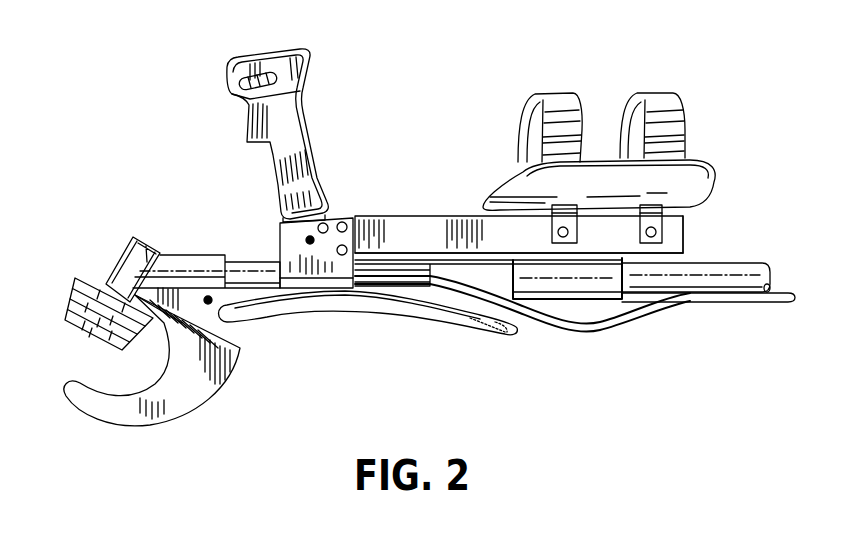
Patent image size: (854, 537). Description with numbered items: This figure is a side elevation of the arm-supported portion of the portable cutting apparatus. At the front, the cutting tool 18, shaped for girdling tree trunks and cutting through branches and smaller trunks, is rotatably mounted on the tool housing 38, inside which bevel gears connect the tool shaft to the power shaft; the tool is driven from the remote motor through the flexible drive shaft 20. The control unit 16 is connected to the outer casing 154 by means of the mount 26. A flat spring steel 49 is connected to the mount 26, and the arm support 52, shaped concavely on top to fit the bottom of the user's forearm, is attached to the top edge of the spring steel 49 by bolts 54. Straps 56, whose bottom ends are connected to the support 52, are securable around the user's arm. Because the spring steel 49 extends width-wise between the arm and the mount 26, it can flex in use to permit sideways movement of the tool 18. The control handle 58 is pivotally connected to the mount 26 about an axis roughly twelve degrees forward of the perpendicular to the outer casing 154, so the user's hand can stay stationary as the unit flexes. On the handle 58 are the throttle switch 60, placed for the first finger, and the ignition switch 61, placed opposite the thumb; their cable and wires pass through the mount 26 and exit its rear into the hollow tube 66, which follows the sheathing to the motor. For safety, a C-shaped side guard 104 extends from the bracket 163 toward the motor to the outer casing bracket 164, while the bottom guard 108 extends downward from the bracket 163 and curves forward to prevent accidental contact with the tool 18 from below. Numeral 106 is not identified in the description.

The control unit 16 is at (688, 239).
The cutting tool 18 is at (72, 290).
The flexible drive shaft 20 is at (708, 278).
The mount 26 is at (272, 230).
The tool housing 38 is at (132, 250).
The flat spring steel 49 is at (412, 223).
The arm support 52 is at (715, 182).
The bolts 54 is at (573, 245).
The straps 56 is at (660, 93).
The control handle 58 is at (303, 110).
The throttle switch 60 is at (247, 125).
The ignition switch 61 is at (273, 82).
The hollow tube 66 is at (780, 302).
The side guard 104 is at (325, 293).
The cable 106 is at (550, 282).
The bottom guard 108 is at (180, 390).
The outer casing 154 is at (408, 278).
The bracket 163 is at (193, 297).
The outer casing bracket 164 is at (493, 337).